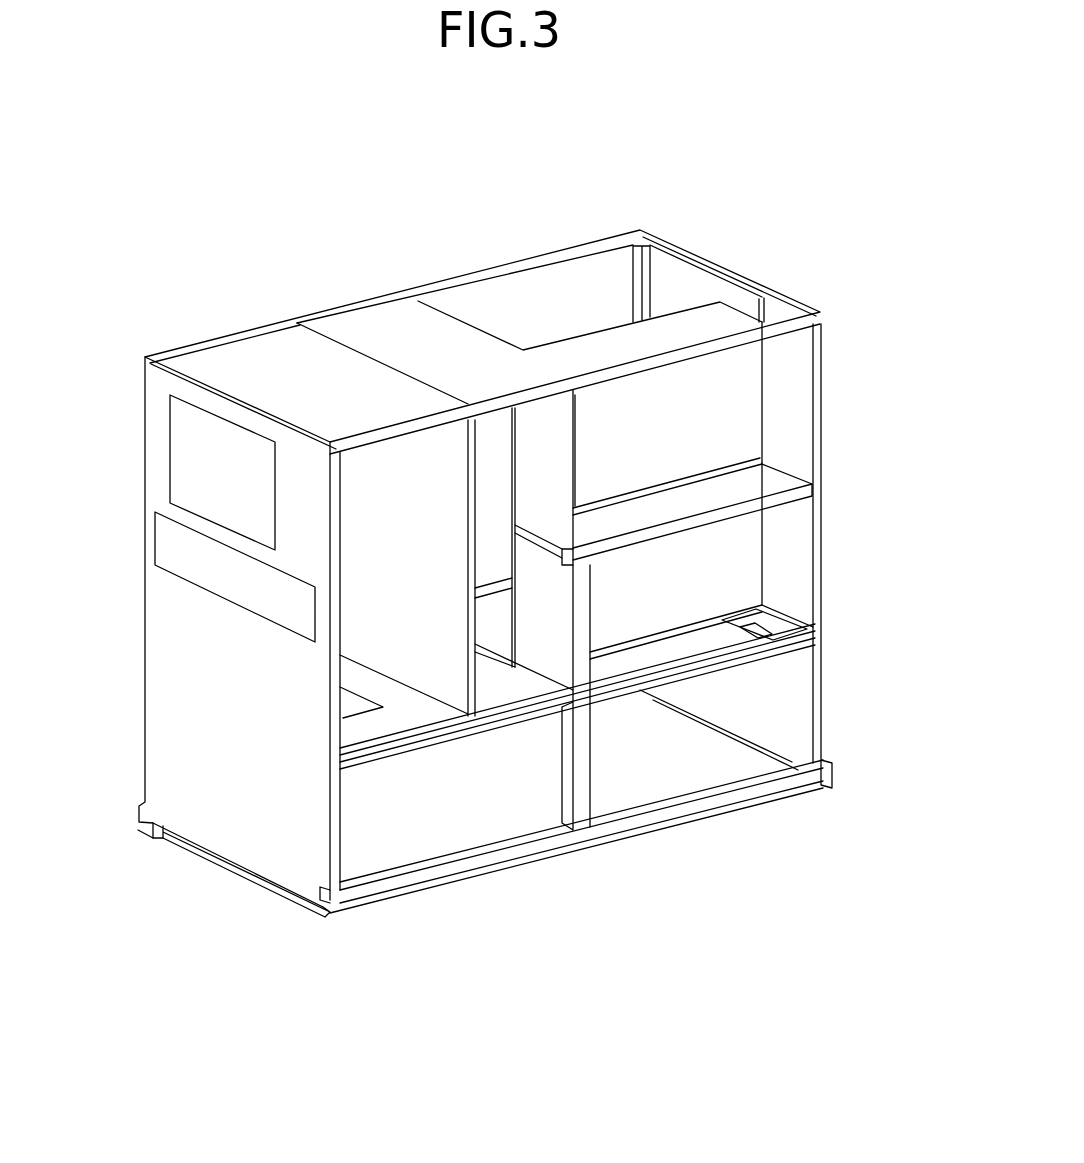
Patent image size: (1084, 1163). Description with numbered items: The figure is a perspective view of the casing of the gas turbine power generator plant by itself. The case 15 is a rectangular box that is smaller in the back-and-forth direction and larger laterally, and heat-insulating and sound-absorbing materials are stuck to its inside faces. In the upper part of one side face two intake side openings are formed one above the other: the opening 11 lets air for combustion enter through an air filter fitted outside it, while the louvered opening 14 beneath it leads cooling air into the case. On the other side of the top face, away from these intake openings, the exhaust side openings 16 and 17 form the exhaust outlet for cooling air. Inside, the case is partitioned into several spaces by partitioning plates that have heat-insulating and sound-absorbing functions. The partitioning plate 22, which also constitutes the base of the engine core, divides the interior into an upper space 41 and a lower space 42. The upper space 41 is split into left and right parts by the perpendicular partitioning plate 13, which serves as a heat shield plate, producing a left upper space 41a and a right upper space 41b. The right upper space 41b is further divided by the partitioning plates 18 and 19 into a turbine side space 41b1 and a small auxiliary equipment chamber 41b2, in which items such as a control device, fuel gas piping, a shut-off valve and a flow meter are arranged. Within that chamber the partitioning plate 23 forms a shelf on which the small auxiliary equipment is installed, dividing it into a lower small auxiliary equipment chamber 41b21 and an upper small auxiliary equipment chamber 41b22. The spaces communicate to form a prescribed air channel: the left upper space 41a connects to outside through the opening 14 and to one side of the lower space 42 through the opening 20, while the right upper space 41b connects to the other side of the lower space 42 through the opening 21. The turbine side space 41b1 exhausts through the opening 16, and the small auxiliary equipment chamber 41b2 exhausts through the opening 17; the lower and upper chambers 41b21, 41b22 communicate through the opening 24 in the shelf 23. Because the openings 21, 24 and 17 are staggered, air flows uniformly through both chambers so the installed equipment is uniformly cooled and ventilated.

The intake side opening 11 is at (182, 440).
The partitioning plate 13 is at (420, 655).
The intake side opening 14 is at (158, 532).
The case 15 is at (261, 325).
The exhaust side opening 16 is at (558, 285).
The exhaust side opening 17 is at (775, 318).
The partitioning plate 18 is at (560, 620).
The partitioning plate 19 is at (730, 430).
The opening 20 is at (355, 708).
The opening 21 is at (760, 650).
The partitioning plate 22 is at (497, 693).
The partitioning plate (shelf) 23 is at (775, 485).
The opening 24 is at (590, 523).
The upper space 41 is at (358, 630).
The left upper space 41a is at (358, 588).
The right upper space 41b is at (492, 440).
The turbine side space 41b1 is at (485, 510).
The small auxiliary equipment chamber 41b2 is at (840, 482).
The lower small auxiliary equipment chamber 41b21 is at (755, 540).
The upper small auxiliary equipment chamber 41b22 is at (750, 370).
The lower space 42 is at (352, 863).